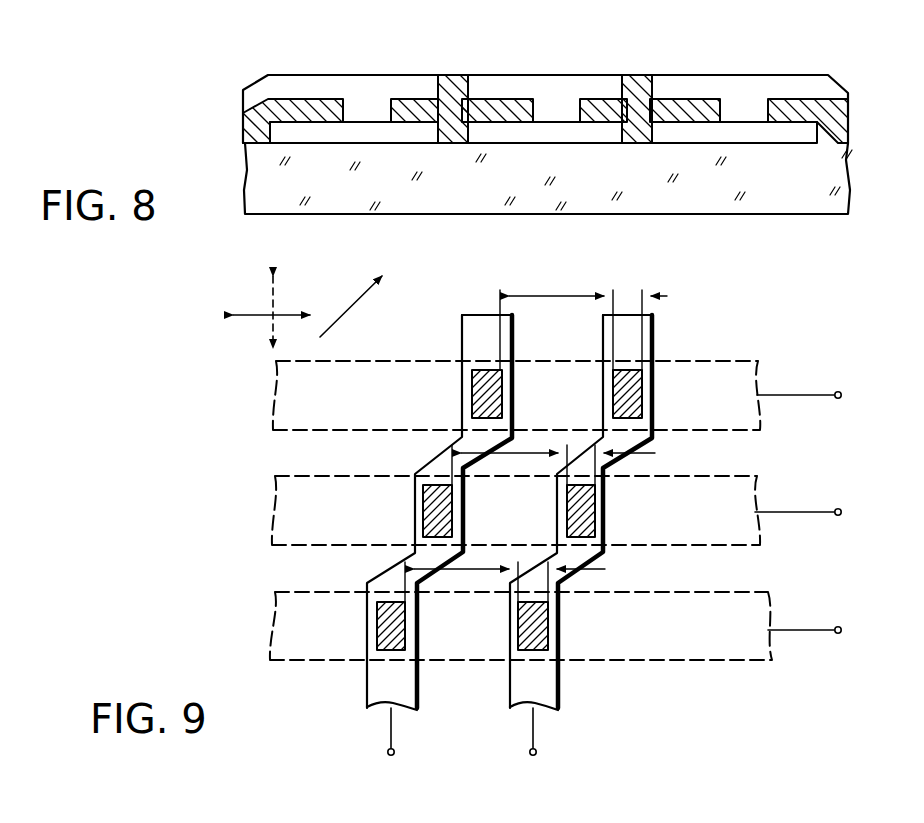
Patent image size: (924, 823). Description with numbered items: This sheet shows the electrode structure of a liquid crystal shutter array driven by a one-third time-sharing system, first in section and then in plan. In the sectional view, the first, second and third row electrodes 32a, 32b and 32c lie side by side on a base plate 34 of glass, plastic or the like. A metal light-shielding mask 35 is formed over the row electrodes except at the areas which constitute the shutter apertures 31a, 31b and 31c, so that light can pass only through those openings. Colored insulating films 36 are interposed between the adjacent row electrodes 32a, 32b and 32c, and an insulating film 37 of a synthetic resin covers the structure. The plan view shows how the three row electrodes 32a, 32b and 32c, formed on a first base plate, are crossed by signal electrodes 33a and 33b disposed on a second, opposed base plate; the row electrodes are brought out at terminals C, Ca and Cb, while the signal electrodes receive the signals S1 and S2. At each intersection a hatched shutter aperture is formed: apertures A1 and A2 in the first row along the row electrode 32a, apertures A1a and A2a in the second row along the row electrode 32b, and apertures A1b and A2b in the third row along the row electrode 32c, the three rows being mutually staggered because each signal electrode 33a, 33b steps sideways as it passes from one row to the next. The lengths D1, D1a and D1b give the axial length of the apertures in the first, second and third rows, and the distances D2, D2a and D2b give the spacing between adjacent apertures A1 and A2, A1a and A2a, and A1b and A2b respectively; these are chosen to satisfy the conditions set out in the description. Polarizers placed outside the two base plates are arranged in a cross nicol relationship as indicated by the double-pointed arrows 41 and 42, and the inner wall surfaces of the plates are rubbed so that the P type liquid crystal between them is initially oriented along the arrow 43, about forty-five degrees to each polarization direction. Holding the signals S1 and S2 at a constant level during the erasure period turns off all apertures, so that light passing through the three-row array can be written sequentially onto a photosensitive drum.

In FIG. 8, the shutter aperture 31a is at (333, 92).
In FIG. 8, the shutter aperture 31b is at (550, 100).
In FIG. 8, the shutter aperture 31c is at (747, 100).
In FIG. 8, the first row electrode 32a is at (387, 138).
In FIG. 9, the first row electrode 32a is at (757, 366).
In FIG. 8, the second row electrode 32b is at (573, 138).
In FIG. 9, the second row electrode 32b is at (757, 480).
In FIG. 8, the third row electrode 32c is at (748, 143).
In FIG. 9, the third row electrode 32c is at (757, 598).
In FIG. 9, the signal electrode 33a is at (647, 335).
In FIG. 9, the signal electrode 33b is at (463, 333).
In FIG. 8, the base plate 34 is at (848, 178).
In FIG. 8, the metal light-shielding mask 35 is at (402, 108).
In FIG. 8, the colored insulating film 36 is at (448, 83).
In FIG. 8, the insulating film 37 is at (812, 86).
In FIG. 9, the double-pointed arrow 41 is at (289, 313).
In FIG. 9, the double-pointed arrow 42 is at (270, 298).
In FIG. 9, the arrow 43 is at (349, 305).
In FIG. 9, the shutter aperture A1 is at (640, 386).
In FIG. 9, the shutter aperture A2 is at (472, 396).
In FIG. 9, the shutter aperture A1a is at (598, 506).
In FIG. 9, the shutter aperture A2a is at (428, 502).
In FIG. 9, the shutter aperture A1b is at (548, 636).
In FIG. 9, the shutter aperture A2b is at (378, 638).
In FIG. 9, the length of first-row shutter aperture D1 is at (668, 321).
In FIG. 9, the distance between adjacent first-row shutter apertures D2 is at (556, 321).
In FIG. 9, the length of second-row shutter aperture D1a is at (645, 457).
In FIG. 9, the distance between adjacent second-row shutter apertures D2a is at (509, 457).
In FIG. 9, the length of third-row shutter aperture D1b is at (599, 574).
In FIG. 9, the distance between adjacent third-row shutter apertures D2b is at (461, 574).
In FIG. 9, the common terminal C is at (810, 397).
In FIG. 9, the common terminal Ca is at (815, 514).
In FIG. 9, the common terminal Cb is at (822, 632).
In FIG. 9, the signal S1 is at (549, 739).
In FIG. 9, the signal S2 is at (406, 739).